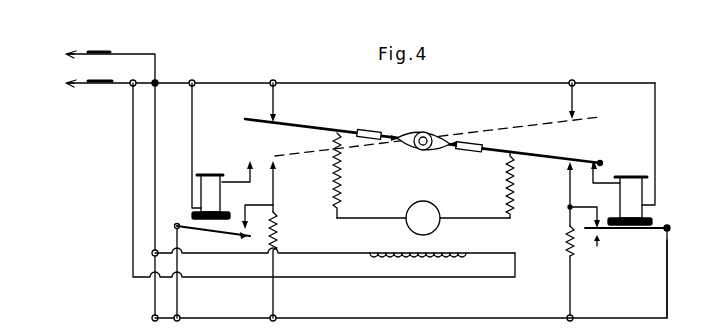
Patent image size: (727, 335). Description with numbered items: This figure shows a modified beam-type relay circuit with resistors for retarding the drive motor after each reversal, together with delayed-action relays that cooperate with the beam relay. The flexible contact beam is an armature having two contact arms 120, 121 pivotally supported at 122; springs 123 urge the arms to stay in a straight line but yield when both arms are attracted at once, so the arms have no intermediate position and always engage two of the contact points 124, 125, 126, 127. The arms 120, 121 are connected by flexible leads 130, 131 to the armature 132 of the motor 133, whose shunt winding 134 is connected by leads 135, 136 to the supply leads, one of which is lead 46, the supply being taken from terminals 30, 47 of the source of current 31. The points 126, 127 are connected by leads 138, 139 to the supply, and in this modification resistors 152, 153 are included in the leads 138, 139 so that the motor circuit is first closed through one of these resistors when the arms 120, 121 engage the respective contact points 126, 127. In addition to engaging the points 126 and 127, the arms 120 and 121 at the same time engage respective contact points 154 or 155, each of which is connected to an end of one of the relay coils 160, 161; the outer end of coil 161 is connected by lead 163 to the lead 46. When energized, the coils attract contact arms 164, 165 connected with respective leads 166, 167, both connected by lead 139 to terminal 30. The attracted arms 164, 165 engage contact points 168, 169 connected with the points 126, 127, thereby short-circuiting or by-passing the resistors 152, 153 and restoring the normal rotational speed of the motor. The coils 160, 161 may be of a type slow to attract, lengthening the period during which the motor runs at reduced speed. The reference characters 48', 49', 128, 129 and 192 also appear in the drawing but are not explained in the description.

The terminal 30 is at (68, 53).
The source of current 31 is at (66, 80).
The lead 46 is at (540, 83).
The terminal 47 is at (66, 101).
The switch blade 48' is at (101, 100).
The switch blade 49' is at (108, 36).
The contact arm 120 is at (314, 127).
The contact arm 121 is at (593, 160).
The pivot 122 is at (431, 134).
The springs 123 is at (398, 134).
The contact point 124 is at (274, 120).
The contact point 125 is at (574, 116).
The contact point 126 is at (277, 165).
The contact point 127 is at (569, 166).
The resistor 128 is at (368, 130).
The resistor 129 is at (471, 142).
The flexible lead 130 is at (339, 173).
The flexible lead 131 is at (513, 196).
The armature 132 is at (438, 207).
The motor 133 is at (423, 233).
The shunt winding 134 is at (442, 266).
The lead 135 is at (307, 256).
The lead 136 is at (133, 210).
The lead 138 is at (273, 300).
The lead 139 is at (155, 143).
The resistor 152 is at (279, 221).
The resistor 153 is at (569, 230).
The contact point 154 is at (253, 150).
The contact point 155 is at (600, 166).
The relay coil 160 is at (210, 175).
The relay coil 161 is at (641, 192).
The lead 163 is at (655, 122).
The contact arm 164 is at (213, 240).
The contact arm 165 is at (632, 230).
The lead 166 is at (177, 300).
The lead 167 is at (667, 282).
The contact point 168 is at (247, 224).
The contact point 169 is at (570, 218).
The conductor 192 is at (192, 116).